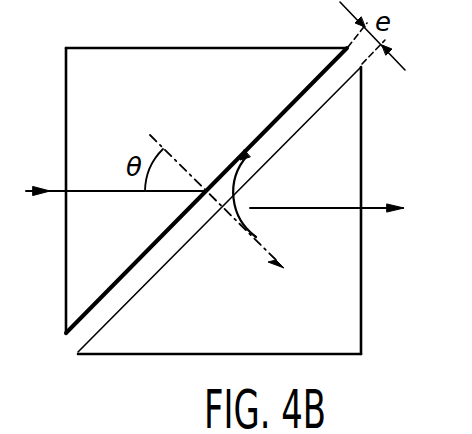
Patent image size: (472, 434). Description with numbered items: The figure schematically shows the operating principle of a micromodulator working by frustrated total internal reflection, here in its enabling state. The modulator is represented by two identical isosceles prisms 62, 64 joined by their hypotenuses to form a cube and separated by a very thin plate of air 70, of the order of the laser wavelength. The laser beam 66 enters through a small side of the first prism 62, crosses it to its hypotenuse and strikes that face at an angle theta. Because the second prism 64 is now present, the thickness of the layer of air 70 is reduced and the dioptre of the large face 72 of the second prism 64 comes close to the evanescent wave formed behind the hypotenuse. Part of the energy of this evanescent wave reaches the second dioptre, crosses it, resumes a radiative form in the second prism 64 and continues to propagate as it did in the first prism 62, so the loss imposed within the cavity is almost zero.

The first prism 62 is at (134, 65).
The second prism 64 is at (321, 316).
The laser beam 66 is at (58, 191).
The plate of air 70 is at (328, 86).
The large face of the second prism 72 is at (313, 117).